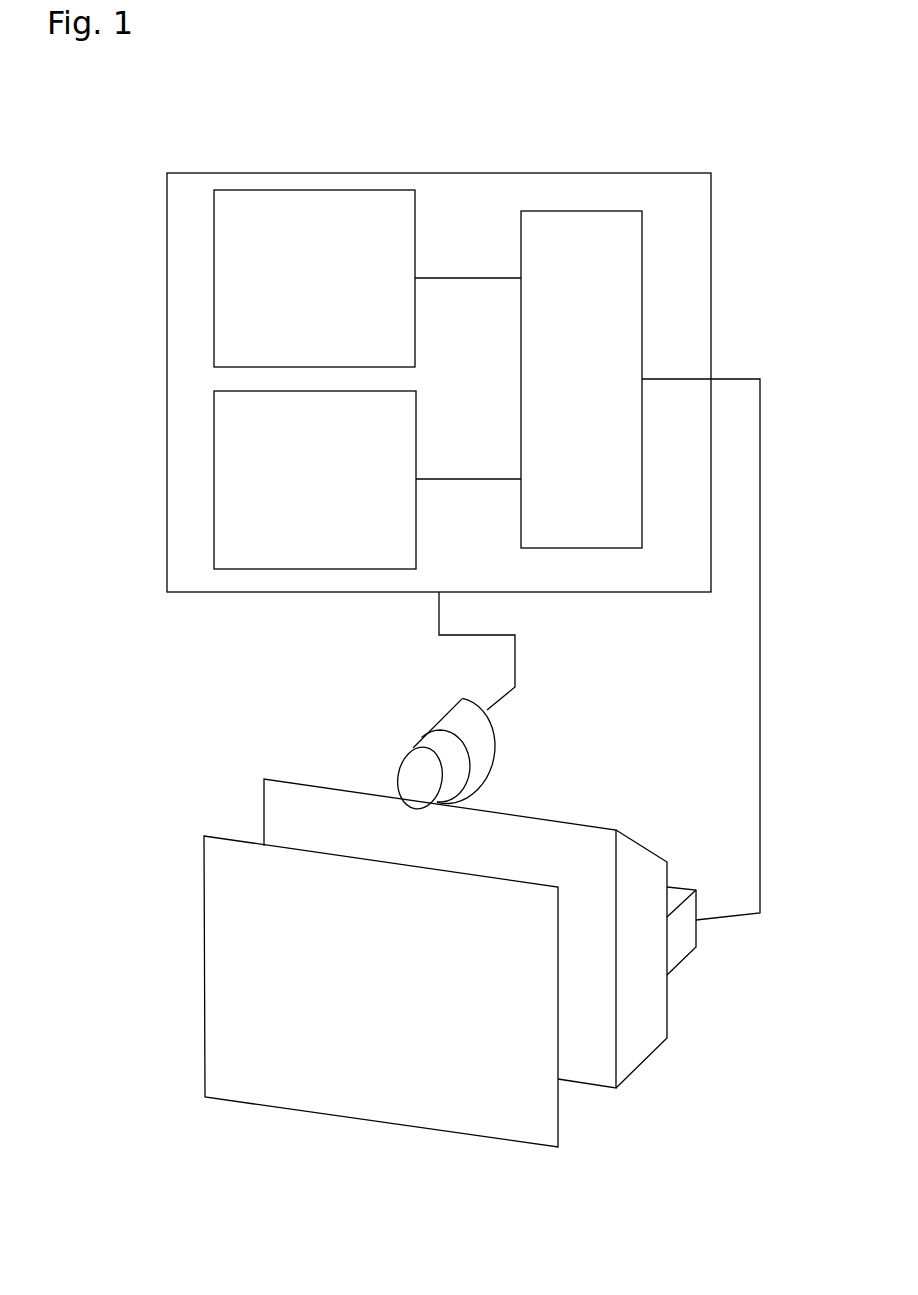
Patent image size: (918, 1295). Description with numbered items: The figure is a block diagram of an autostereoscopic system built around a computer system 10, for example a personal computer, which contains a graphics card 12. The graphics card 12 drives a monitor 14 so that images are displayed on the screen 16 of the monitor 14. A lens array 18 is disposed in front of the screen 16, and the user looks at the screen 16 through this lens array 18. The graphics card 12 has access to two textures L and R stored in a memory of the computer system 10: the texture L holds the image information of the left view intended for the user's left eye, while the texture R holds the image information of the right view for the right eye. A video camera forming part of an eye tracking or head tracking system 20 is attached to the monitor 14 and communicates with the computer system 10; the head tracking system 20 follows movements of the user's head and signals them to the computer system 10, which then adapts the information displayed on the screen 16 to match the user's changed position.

The computer system 10 is at (473, 156).
The graphics card 12 is at (642, 263).
The monitor 14 is at (604, 818).
The screen 16 is at (538, 840).
The lens array 18 is at (217, 911).
The head tracking system 20 is at (416, 746).
The texture L is at (405, 243).
The texture R is at (407, 445).